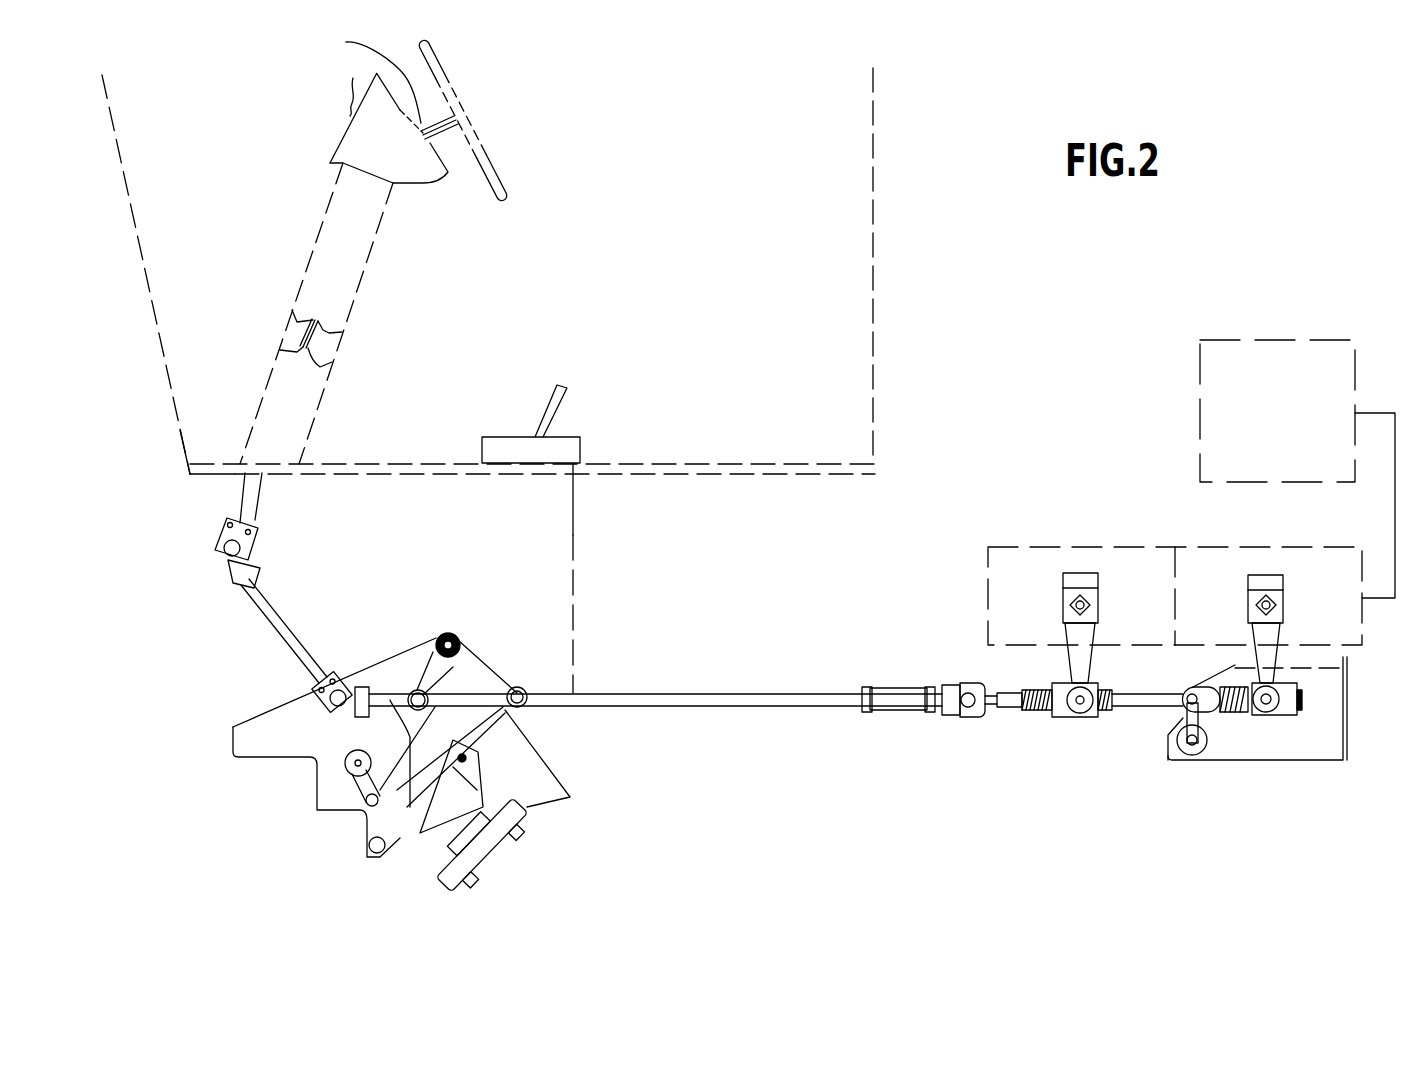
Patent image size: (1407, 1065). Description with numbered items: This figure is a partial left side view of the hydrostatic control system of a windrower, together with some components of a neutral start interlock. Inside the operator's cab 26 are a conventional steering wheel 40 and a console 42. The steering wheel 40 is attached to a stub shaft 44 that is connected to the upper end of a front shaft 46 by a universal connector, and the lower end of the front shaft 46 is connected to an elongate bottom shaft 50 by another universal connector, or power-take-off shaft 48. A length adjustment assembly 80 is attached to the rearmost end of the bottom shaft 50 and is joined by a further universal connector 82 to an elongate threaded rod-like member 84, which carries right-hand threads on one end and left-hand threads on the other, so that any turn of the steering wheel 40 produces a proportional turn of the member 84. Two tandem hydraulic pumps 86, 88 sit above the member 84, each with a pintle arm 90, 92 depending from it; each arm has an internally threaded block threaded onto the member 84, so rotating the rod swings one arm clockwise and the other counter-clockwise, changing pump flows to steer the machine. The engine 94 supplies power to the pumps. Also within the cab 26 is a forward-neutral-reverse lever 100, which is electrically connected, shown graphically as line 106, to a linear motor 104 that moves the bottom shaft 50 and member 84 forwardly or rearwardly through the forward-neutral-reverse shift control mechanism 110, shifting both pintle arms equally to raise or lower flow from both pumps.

The operator's cab 26 is at (868, 243).
The steering wheel 40 is at (500, 177).
The console 42 is at (353, 273).
The stub shaft 44 is at (346, 42).
The front shaft 46 is at (310, 337).
The power-take-off shaft 48 is at (283, 620).
The bottom shaft 50 is at (642, 697).
The length adjustment assembly 80 is at (893, 700).
The universal connector 82 is at (970, 713).
The threaded rod-like member 84 is at (1147, 700).
The hydraulic pump 86 is at (1052, 548).
The hydraulic pump 88 is at (1252, 560).
The pintle arm 90 is at (1077, 657).
The pintle arm 92 is at (1267, 655).
The engine 94 is at (1230, 345).
The forward-neutral-reverse lever 100 is at (555, 403).
The linear motor 104 is at (485, 850).
The line 106 is at (575, 532).
The forward-neutral-reverse shift control mechanism 110 is at (500, 617).